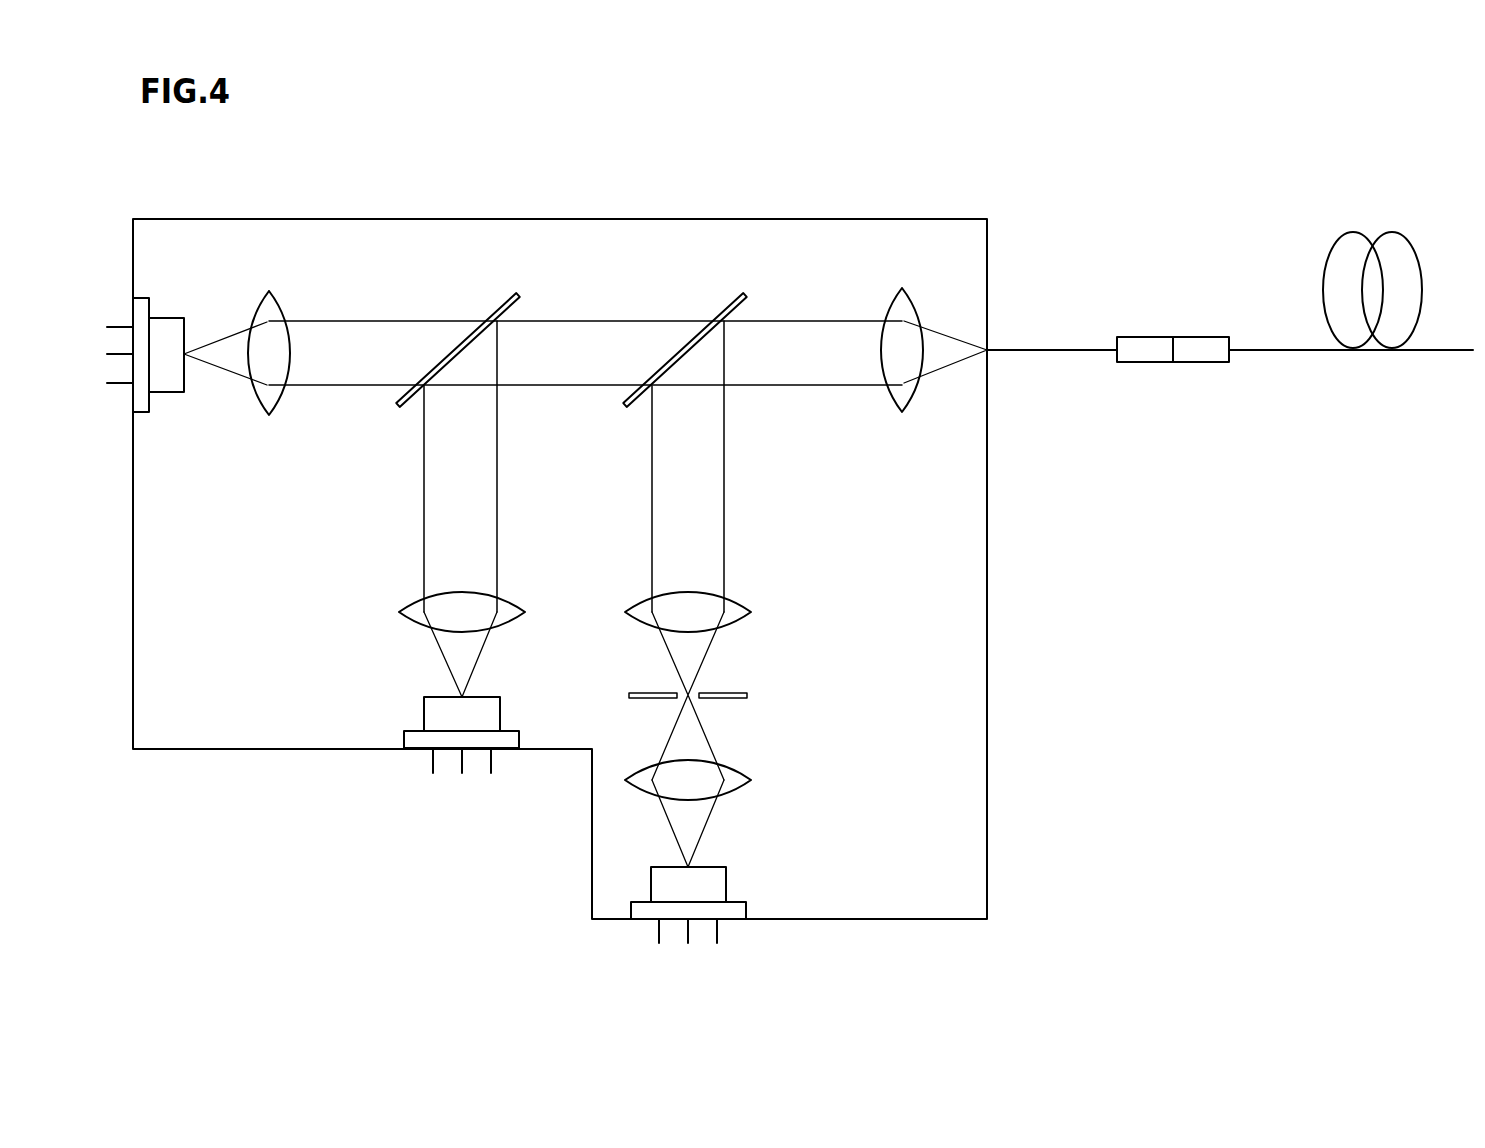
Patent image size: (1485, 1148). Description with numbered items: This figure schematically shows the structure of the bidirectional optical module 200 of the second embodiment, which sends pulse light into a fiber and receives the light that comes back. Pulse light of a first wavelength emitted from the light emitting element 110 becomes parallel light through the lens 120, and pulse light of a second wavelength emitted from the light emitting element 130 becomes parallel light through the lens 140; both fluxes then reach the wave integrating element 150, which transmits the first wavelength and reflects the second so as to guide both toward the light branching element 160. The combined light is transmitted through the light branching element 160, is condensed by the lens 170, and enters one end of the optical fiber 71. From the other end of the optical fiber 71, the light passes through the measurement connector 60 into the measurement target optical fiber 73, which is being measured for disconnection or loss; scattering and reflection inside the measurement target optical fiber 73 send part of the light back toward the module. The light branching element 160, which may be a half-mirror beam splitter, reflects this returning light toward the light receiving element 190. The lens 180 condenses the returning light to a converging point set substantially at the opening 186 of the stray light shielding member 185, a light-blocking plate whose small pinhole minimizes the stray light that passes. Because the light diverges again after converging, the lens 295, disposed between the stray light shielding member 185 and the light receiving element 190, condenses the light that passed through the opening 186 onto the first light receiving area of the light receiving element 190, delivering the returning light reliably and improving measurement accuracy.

The bidirectional optical module 200 is at (845, 217).
The light emitting element 110 is at (168, 395).
The lens 120 is at (281, 298).
The wave integrating element 150 is at (500, 297).
The light branching element 160 is at (727, 297).
The lens 170 is at (908, 295).
The lens 140 is at (410, 603).
The light emitting element 130 is at (424, 710).
The lens 180 is at (733, 603).
The stray light shielding member 185 is at (733, 690).
The opening 186 is at (697, 700).
The lens 295 is at (735, 772).
The light receiving element 190 is at (727, 883).
The optical fiber 71 is at (1053, 350).
The measurement connector 60 is at (1143, 337).
The measurement target optical fiber 73 is at (1433, 350).